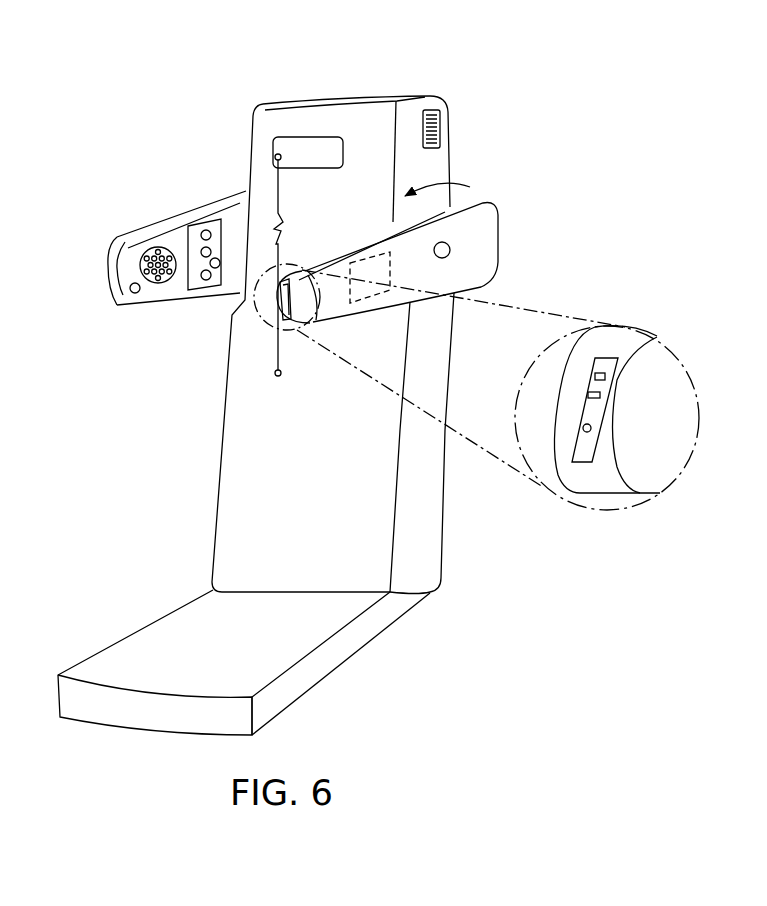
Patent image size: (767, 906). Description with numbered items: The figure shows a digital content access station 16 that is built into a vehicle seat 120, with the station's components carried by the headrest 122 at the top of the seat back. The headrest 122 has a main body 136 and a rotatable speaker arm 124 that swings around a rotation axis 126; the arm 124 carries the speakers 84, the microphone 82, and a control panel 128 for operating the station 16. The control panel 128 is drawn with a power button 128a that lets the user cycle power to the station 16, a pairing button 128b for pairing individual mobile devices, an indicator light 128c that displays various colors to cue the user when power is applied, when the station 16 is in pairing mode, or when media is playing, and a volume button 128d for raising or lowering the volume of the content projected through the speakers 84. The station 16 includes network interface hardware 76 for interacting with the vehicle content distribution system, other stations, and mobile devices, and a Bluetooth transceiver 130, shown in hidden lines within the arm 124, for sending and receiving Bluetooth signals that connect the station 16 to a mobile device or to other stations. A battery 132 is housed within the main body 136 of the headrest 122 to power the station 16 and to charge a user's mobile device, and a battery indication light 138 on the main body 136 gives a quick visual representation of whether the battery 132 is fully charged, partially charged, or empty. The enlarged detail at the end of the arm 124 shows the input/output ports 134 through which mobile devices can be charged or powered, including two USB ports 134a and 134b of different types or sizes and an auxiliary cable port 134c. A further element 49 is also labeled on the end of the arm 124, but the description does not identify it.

The digital content access station 16 is at (487, 135).
The network interface hardware 76 is at (331, 92).
The headrest 122 is at (248, 110).
The main body 136 is at (350, 115).
The battery 132 is at (313, 147).
The battery indication light 138 is at (428, 108).
The vehicle seat 120 is at (490, 577).
The control panel 128 is at (225, 200).
The power button 128a is at (201, 277).
The pairing button 128b is at (200, 250).
The indicator light 128c is at (205, 230).
The volume button 128d is at (215, 268).
The microphone 82 is at (130, 290).
The speakers 84 is at (140, 260).
The rotatable speaker arm 124 is at (498, 202).
The rotation axis 126 is at (450, 249).
The Bluetooth transceiver 130 is at (372, 300).
The connector port 49 is at (276, 318).
The input/output ports 134 is at (628, 348).
The USB port 134a is at (605, 377).
The USB port 134b is at (600, 395).
The auxiliary cable port 134c is at (591, 428).